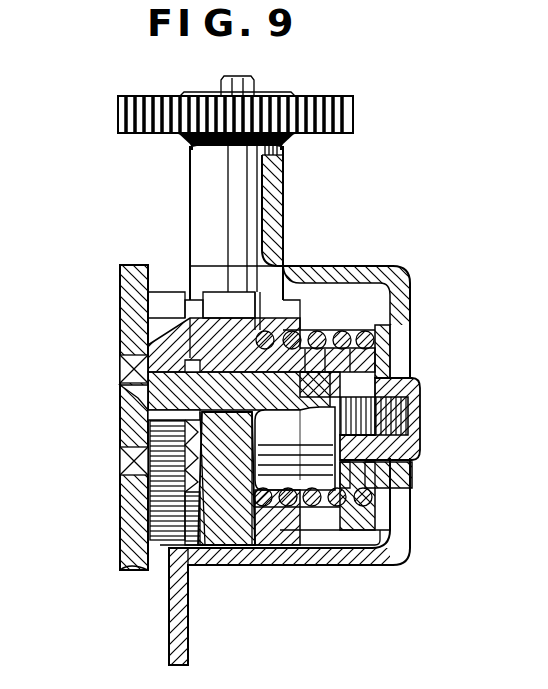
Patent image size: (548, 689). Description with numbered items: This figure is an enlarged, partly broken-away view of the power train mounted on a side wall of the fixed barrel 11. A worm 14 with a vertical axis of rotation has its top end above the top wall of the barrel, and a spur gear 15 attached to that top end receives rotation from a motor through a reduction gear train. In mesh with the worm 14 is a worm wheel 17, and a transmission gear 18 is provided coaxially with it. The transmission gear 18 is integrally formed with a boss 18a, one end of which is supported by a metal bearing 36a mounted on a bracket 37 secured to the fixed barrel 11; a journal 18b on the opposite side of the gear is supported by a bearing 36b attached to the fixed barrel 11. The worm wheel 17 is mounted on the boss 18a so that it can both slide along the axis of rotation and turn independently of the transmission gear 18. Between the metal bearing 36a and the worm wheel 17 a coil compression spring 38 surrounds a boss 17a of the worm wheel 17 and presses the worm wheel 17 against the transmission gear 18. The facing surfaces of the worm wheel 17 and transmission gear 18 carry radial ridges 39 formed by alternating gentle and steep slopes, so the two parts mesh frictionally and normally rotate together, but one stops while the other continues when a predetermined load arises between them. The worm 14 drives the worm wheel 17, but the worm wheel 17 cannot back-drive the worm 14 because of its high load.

The fixed barrel 11 is at (128, 284).
The worm 14 is at (283, 522).
The spur gear 15 is at (138, 134).
The worm wheel 17 is at (218, 300).
The boss of the worm wheel 17a is at (326, 330).
The transmission gear 18 is at (150, 340).
The boss 18a is at (376, 372).
The journal 18b is at (132, 418).
The metal bearing 36a is at (396, 390).
The bearing 36b is at (126, 372).
The bracket 37 is at (384, 562).
The coil compression spring 38 is at (368, 506).
The radial ridges 39 is at (145, 478).